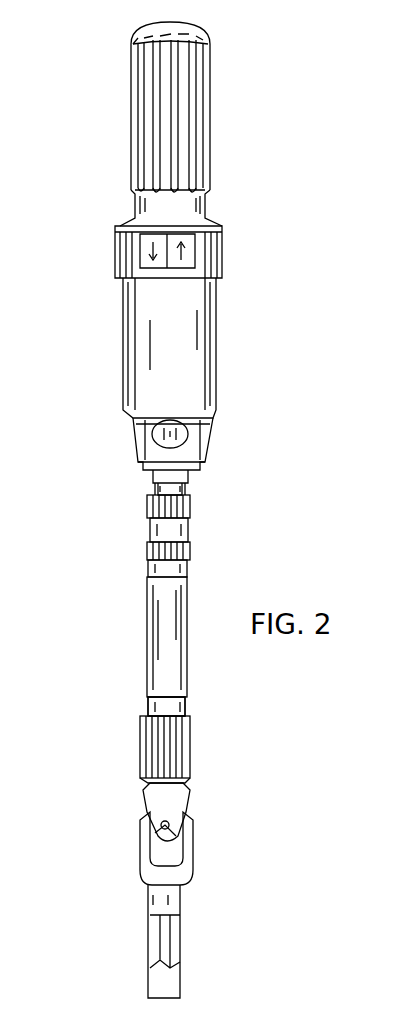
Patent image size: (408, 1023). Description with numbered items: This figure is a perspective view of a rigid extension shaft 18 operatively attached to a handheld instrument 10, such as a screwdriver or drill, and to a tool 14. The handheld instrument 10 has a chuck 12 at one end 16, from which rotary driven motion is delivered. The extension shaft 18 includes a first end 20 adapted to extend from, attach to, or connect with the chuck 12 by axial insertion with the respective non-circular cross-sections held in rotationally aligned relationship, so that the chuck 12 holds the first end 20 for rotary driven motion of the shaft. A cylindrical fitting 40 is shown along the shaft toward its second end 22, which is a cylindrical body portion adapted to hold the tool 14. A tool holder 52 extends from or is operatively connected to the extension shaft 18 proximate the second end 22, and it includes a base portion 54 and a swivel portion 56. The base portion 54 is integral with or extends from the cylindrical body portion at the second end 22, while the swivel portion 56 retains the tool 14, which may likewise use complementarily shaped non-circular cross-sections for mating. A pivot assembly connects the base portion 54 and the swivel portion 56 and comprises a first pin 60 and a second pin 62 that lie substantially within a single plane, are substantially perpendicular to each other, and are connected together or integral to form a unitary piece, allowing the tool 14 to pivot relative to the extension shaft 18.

The handheld instrument 10 is at (235, 343).
The chuck 12 is at (185, 478).
The tool 14 is at (182, 953).
The end 16 is at (207, 440).
The extension shaft 18 is at (98, 596).
The first end 20 is at (152, 486).
The second end 22 is at (192, 762).
The cylindrical fitting 40 is at (190, 722).
The tool holder 52 is at (201, 838).
The base portion 54 is at (166, 812).
The swivel portion 56 is at (166, 853).
The first pin 60 is at (150, 838).
The second pin 62 is at (192, 845).